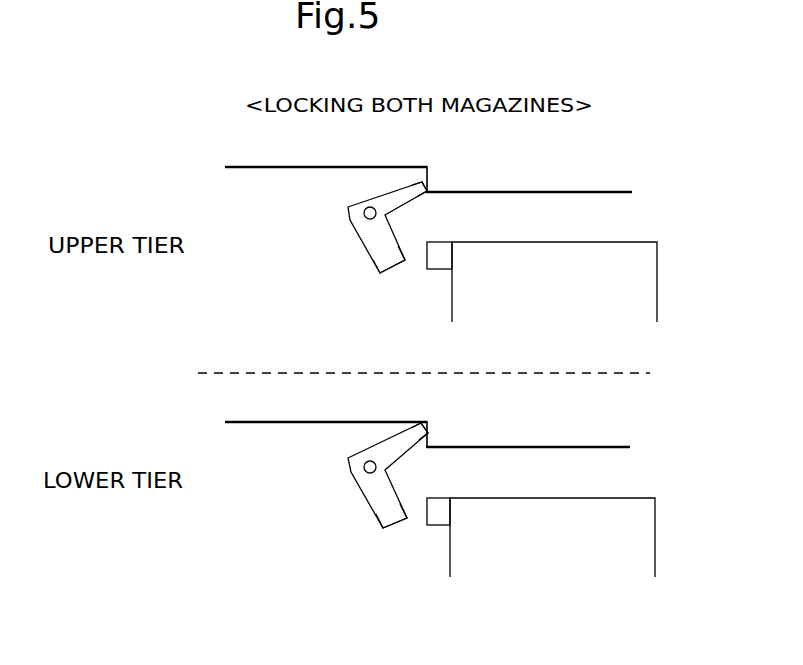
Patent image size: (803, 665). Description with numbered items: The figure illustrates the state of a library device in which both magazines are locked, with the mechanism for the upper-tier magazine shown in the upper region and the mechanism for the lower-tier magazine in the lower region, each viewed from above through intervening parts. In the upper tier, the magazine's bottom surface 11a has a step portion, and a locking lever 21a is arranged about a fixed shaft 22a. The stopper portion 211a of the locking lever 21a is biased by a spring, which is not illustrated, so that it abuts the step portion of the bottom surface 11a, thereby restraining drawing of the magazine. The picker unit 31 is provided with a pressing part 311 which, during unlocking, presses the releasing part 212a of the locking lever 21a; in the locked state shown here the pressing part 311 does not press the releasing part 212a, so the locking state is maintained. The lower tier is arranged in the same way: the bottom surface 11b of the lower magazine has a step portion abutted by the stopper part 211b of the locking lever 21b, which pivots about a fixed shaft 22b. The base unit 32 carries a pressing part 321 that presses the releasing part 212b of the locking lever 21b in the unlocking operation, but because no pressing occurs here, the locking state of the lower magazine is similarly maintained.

The bottom surface 11a is at (270, 160).
The locking lever 21a is at (353, 210).
The fixed shaft 22a is at (353, 220).
The stopper portion 211a is at (424, 184).
The releasing part 212a is at (380, 273).
The pressing part 311 is at (443, 242).
The picker unit 31 is at (638, 242).
The bottom surface 11b is at (268, 415).
The locking lever 21b is at (352, 463).
The fixed shaft 22b is at (357, 472).
The stopper part 211b is at (428, 432).
The releasing part 212b is at (383, 528).
The pressing part 321 is at (445, 498).
The base unit 32 is at (640, 498).